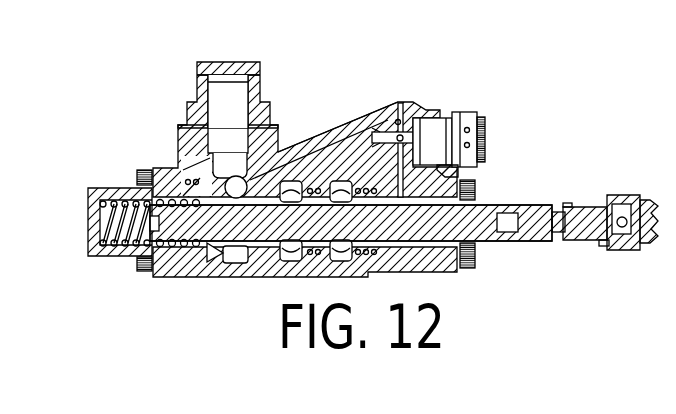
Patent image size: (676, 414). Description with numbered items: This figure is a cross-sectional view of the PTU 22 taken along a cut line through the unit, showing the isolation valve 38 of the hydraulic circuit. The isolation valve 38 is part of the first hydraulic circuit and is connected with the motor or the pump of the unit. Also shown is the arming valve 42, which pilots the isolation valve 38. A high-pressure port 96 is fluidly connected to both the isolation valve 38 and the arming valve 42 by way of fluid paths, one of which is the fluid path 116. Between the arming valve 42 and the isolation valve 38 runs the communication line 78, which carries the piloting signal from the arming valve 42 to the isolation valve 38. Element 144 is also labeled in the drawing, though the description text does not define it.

The PTU 22 is at (130, 101).
The high-pressure port 96 is at (227, 68).
The fluid path 116 is at (302, 163).
The isolation valve 38 is at (304, 205).
The communication line 78 is at (392, 100).
The arming valve 42 is at (443, 125).
The ball 144 is at (220, 180).